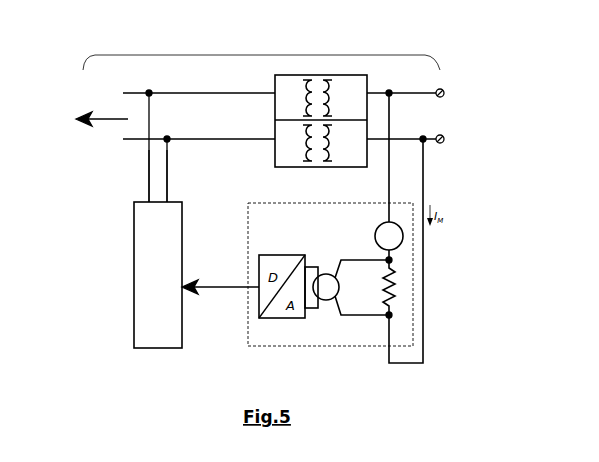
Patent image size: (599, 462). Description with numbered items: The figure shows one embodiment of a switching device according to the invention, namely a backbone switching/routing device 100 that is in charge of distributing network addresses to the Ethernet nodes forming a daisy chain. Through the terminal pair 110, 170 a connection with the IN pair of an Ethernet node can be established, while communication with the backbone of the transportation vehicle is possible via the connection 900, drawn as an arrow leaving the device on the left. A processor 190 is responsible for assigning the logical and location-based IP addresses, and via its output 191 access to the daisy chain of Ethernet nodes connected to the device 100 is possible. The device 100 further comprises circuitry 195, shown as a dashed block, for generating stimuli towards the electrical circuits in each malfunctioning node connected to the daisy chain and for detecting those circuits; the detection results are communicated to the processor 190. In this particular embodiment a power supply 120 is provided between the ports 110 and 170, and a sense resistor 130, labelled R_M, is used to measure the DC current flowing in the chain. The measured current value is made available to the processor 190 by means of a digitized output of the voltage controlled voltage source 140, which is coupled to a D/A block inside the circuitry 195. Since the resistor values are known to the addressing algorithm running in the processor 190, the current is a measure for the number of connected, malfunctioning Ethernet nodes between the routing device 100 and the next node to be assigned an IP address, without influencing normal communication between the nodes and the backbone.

The backbone switching/routing device 100 is at (315, 55).
The terminal 110 is at (446, 96).
The terminal 170 is at (446, 142).
The power supply 120 is at (403, 238).
The sense resistor 130 is at (398, 298).
The voltage controlled voltage source 140 is at (326, 273).
The processor 190 is at (132, 228).
The output 191 is at (165, 184).
The circuitry 195 is at (370, 346).
The connection 900 is at (79, 119).